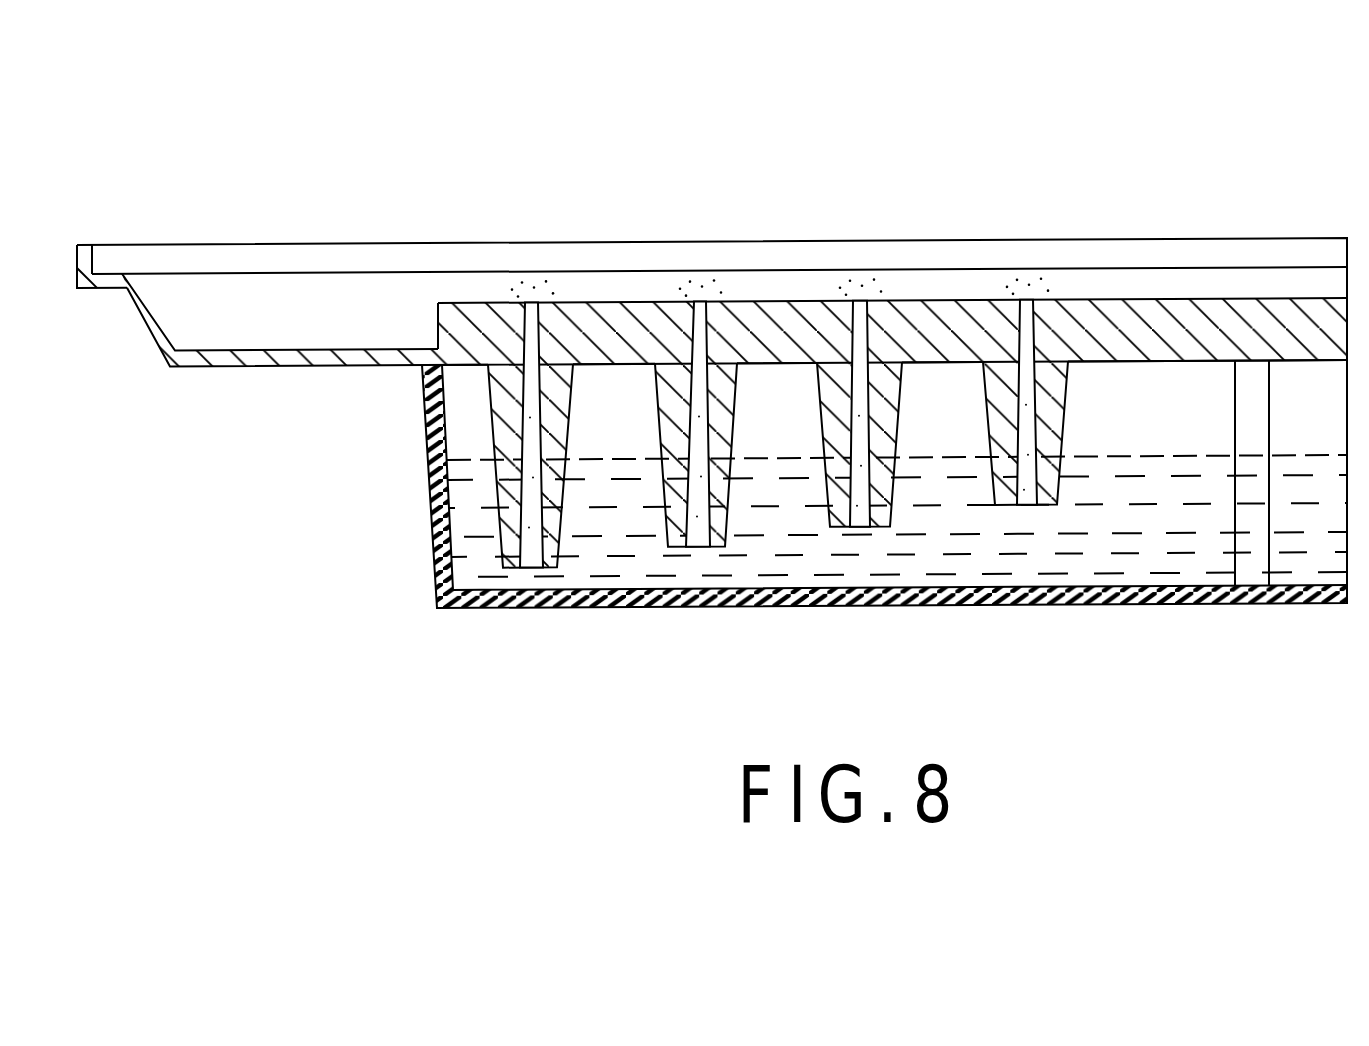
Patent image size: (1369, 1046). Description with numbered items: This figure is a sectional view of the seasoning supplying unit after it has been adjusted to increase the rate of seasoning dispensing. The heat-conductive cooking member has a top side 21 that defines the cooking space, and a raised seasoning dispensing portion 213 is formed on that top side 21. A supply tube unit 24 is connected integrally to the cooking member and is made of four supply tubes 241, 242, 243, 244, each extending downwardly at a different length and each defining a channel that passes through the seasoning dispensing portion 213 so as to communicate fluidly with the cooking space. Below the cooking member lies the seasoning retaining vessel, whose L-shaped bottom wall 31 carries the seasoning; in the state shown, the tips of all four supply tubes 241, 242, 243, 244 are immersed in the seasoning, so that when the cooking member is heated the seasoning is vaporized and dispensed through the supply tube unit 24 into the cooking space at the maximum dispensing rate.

The top side 21 is at (1233, 236).
The seasoning dispensing portion 213 is at (1155, 330).
The supply tube unit 24 is at (1060, 509).
The supply tube 241 is at (555, 525).
The supply tube 242 is at (715, 519).
The supply tube 243 is at (883, 515).
The supply tube 244 is at (1007, 488).
The bottom wall 31 is at (1237, 596).